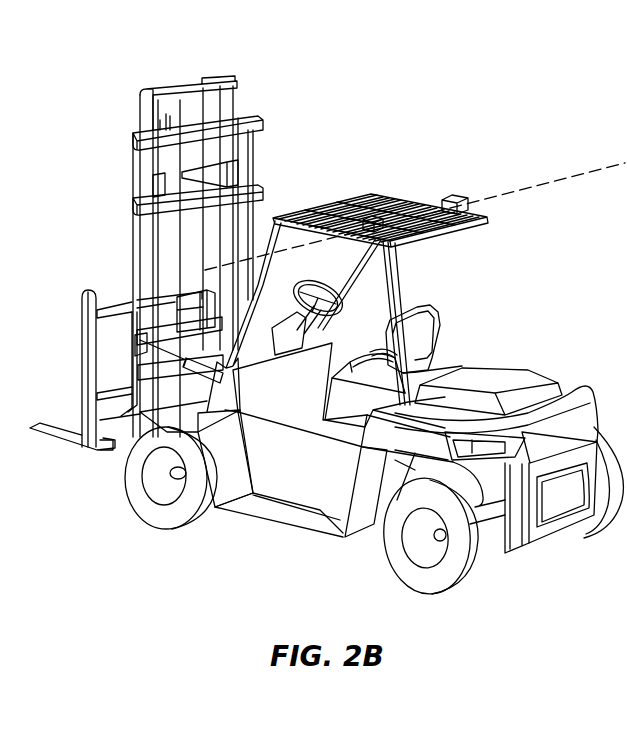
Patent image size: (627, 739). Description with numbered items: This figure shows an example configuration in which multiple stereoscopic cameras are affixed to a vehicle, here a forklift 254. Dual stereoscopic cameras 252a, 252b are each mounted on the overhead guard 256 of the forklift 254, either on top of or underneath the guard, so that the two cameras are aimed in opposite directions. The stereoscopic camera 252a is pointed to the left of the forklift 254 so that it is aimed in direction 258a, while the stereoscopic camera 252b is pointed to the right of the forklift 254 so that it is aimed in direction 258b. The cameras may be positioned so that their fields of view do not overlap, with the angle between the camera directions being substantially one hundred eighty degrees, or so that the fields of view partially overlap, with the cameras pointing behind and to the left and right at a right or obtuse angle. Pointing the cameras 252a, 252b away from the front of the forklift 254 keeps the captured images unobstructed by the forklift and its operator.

The stereoscopic camera 252a is at (368, 217).
The stereoscopic camera 252b is at (452, 195).
The forklift 254 is at (532, 367).
The overhead guard 256 is at (487, 218).
The direction 258a is at (293, 245).
The direction 258b is at (533, 185).